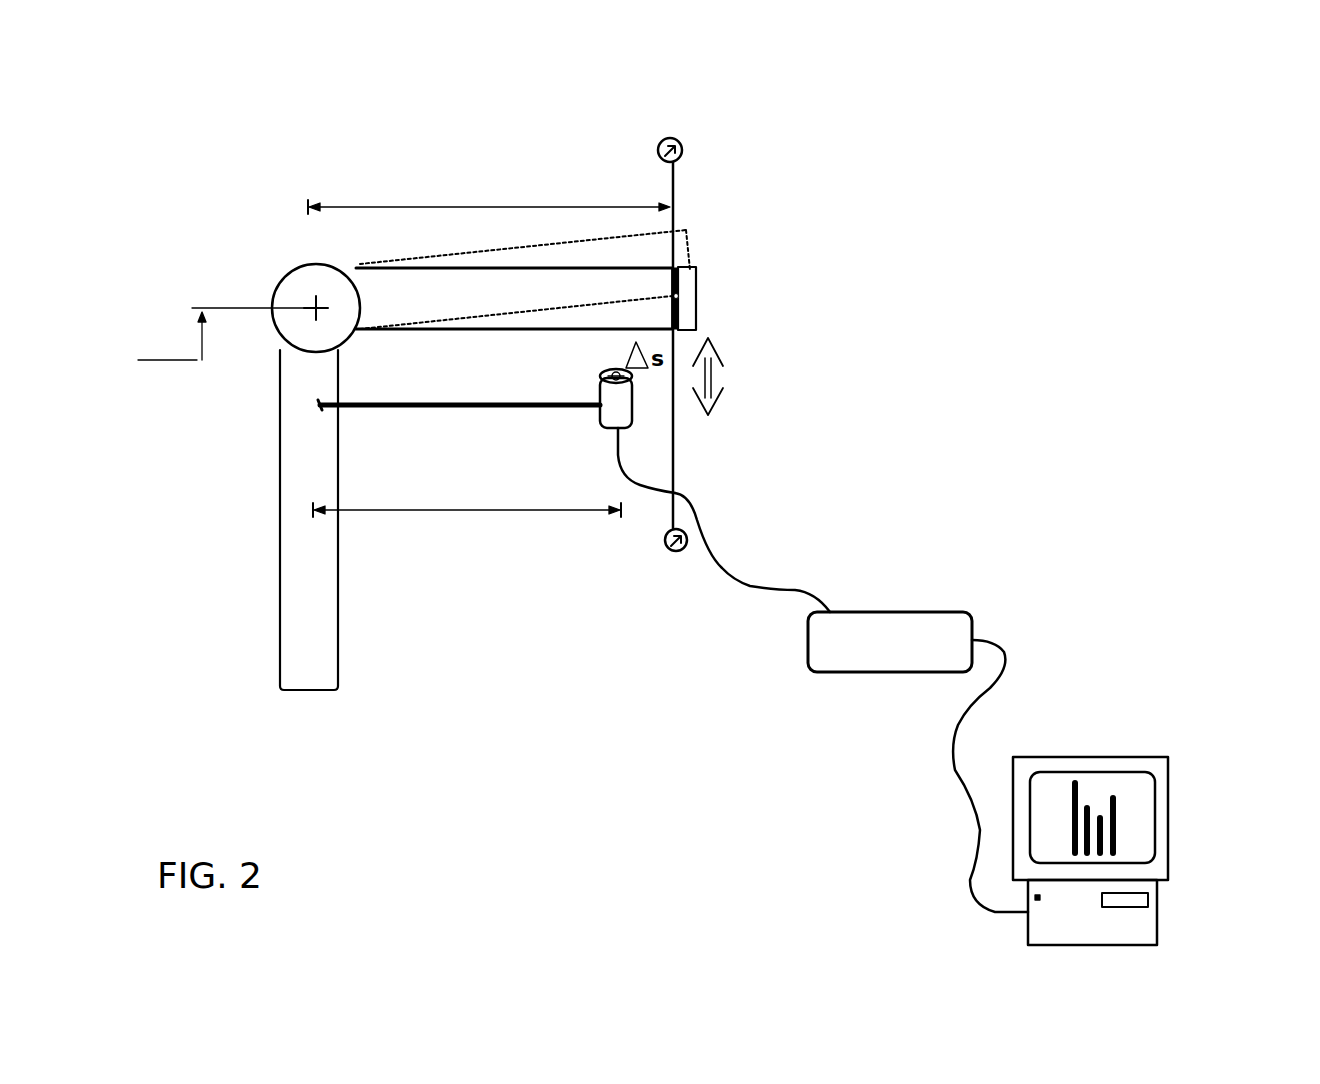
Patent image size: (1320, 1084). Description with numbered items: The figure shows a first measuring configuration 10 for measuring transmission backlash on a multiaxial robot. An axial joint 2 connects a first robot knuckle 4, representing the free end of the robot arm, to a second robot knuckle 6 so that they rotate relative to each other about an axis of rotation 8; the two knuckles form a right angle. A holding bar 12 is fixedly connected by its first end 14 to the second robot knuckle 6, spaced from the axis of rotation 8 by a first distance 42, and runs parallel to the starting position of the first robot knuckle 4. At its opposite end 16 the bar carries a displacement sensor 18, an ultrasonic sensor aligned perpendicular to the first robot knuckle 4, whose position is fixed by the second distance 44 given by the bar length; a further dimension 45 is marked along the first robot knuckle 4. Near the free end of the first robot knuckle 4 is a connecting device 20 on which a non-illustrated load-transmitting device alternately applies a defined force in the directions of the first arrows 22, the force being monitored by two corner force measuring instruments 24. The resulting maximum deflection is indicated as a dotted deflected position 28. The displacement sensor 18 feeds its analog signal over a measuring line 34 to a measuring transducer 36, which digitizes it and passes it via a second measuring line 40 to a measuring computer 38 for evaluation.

The axial joint 2 is at (296, 327).
The first robot knuckle 4 is at (532, 260).
The second robot knuckle 6 is at (300, 642).
The axis of rotation 8 is at (296, 298).
The first measuring configuration 10 is at (552, 832).
The holding bar 12 is at (428, 407).
The first end 14 is at (320, 405).
The sensor 16 is at (582, 405).
The displacement sensor 18 is at (632, 405).
The connecting device 20 is at (690, 290).
The first arrows 22 is at (714, 376).
The force measuring instruments 24 is at (683, 150).
The deflected position 28 is at (626, 222).
The measuring line 34 is at (738, 570).
The measuring transducer 36 is at (882, 616).
The measuring computer 38 is at (1140, 925).
The second measuring line 40 is at (965, 746).
The first distance 42 is at (219, 334).
The second distance 44 is at (405, 512).
The arm length dimension 45 is at (377, 207).